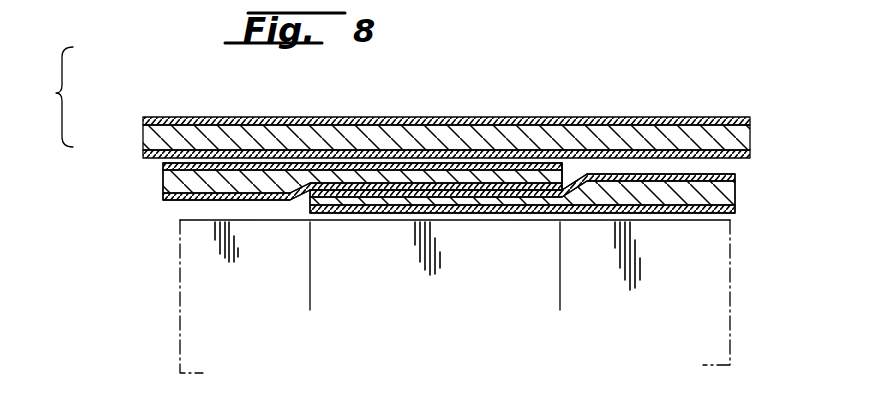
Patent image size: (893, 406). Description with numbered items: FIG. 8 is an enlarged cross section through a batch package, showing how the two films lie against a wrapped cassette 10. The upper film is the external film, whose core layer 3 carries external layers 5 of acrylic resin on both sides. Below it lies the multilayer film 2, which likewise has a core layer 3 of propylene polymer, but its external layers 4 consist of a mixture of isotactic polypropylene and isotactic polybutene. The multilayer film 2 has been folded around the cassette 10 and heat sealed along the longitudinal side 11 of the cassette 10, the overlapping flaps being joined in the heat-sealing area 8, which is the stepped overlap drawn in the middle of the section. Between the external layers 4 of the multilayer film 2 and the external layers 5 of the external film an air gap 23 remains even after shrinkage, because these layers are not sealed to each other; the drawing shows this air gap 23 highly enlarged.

The multilayer film 2 is at (73, 162).
The core layer 3 is at (150, 133).
The external layers 4 is at (162, 168).
The external layers 5 is at (143, 118).
The heat-sealing area 8 is at (560, 318).
The cassette 10 is at (246, 318).
The longitudinal side 11 is at (197, 219).
The air gap 23 is at (563, 158).